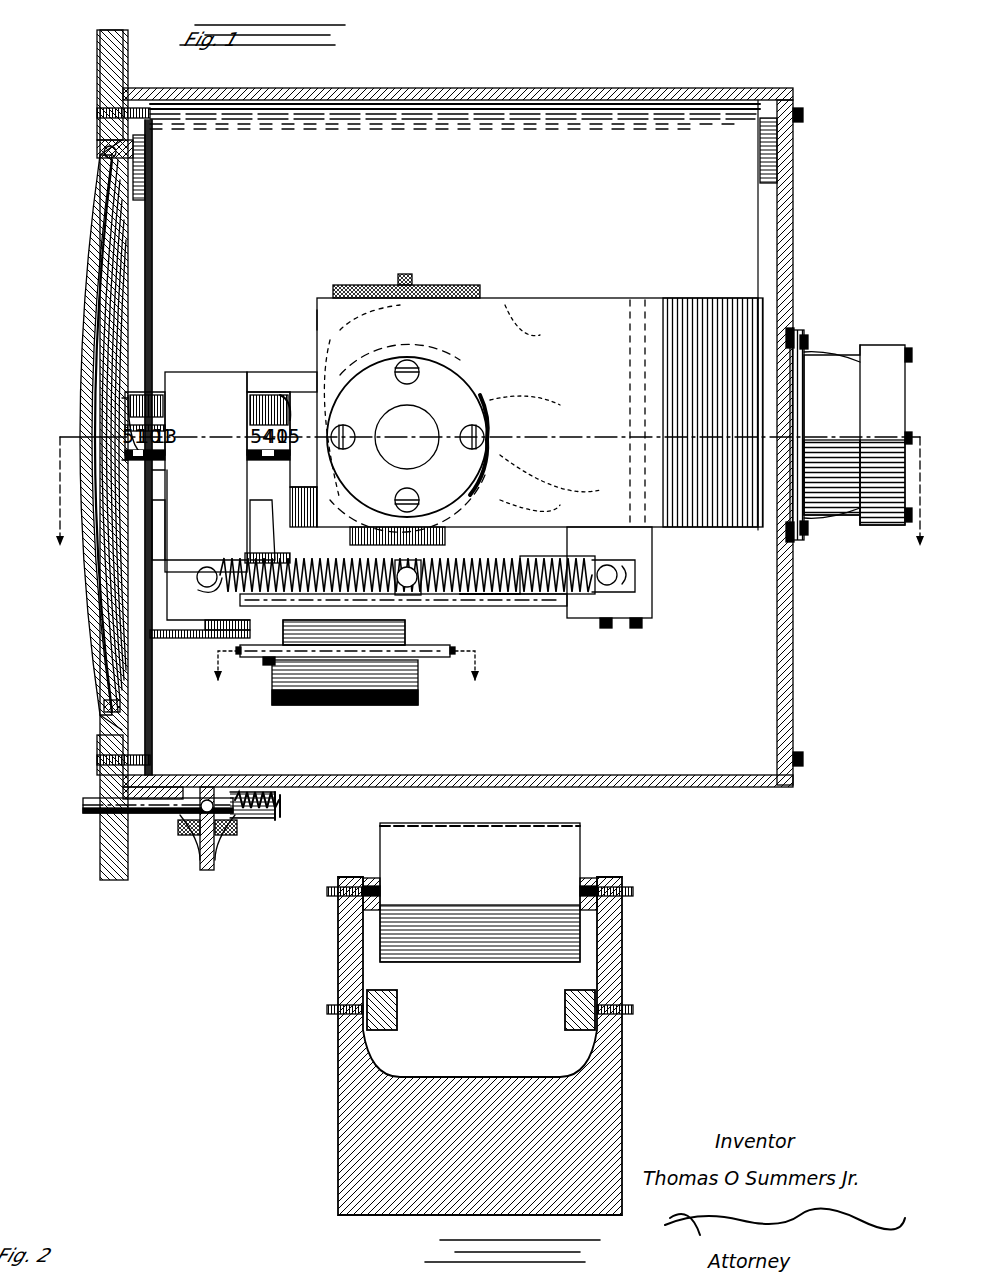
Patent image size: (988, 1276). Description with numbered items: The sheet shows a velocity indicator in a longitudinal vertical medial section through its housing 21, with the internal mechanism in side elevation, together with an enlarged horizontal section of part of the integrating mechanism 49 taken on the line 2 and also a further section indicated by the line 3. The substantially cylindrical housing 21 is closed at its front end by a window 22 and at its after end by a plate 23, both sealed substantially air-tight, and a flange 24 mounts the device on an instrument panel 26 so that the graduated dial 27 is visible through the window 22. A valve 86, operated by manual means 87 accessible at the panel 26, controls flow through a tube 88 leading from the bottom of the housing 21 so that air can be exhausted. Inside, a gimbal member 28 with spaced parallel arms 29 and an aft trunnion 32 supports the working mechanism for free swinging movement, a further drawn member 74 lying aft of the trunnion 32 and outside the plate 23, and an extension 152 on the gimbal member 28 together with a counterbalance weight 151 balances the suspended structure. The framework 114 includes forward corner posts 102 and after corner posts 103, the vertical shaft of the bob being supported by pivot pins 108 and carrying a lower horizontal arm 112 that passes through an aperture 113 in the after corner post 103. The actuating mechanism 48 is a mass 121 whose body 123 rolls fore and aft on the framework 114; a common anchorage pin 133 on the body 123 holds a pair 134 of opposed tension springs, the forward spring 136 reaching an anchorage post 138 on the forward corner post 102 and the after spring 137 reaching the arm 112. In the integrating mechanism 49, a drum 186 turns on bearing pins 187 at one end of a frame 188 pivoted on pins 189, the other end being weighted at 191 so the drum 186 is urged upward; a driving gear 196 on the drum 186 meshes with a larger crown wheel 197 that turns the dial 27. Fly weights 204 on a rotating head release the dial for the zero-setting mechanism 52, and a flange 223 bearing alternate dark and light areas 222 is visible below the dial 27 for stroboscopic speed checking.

In FIG. 1, the housing 21 is at (650, 90).
In FIG. 1, the window 22 is at (90, 252).
In FIG. 1, the plate 23 is at (785, 200).
In FIG. 1, the flange 24 is at (97, 149).
In FIG. 1, the instrument panel 26 is at (97, 72).
In FIG. 1, the graduated dial 27 is at (160, 425).
In FIG. 1, the gimbal member 28 is at (537, 377).
In FIG. 1, the arm 29 is at (518, 305).
In FIG. 1, the trunnion 32 is at (800, 330).
In FIG. 1, the zero-setting mechanism 52 is at (205, 365).
In FIG. 1, the shaft coupling 74 is at (872, 345).
In FIG. 1, the valve 86 is at (170, 822).
In FIG. 1, the manual control means 87 is at (88, 815).
In FIG. 1, the tube 88 is at (197, 862).
In FIG. 1, the forward corner post 102 is at (228, 403).
In FIG. 1, the after corner post 103 is at (648, 546).
In FIG. 1, the pivot pin 108 is at (606, 628).
In FIG. 1, the horizontal arm 112 is at (612, 582).
In FIG. 1, the aperture 113 is at (626, 576).
In FIG. 1, the framework 114 is at (298, 370).
In FIG. 1, the mass 121 is at (485, 606).
In FIG. 1, the body 123 is at (430, 600).
In FIG. 1, the common anchorage pin 133 is at (418, 562).
In FIG. 1, the pair of opposed tension springs 134 is at (238, 552).
In FIG. 1, the forward spring 136 is at (270, 562).
In FIG. 1, the after coil spring 137 is at (582, 560).
In FIG. 1, the anchorage post 138 is at (200, 588).
In FIG. 1, the counterbalance weight 151 is at (457, 285).
In FIG. 1, the extension 152 is at (318, 314).
In FIG. 1, the drum 186 is at (373, 705).
In FIG. 2, the drum 186 is at (385, 836).
In FIG. 2, the pivotal bearing pin 187 is at (342, 903).
In FIG. 2, the frame 188 is at (343, 950).
In FIG. 2, the pin 189 is at (340, 1020).
In FIG. 1, the weight 191 is at (430, 658).
In FIG. 2, the weight 191 is at (343, 1130).
In FIG. 1, the driving gear 196 is at (270, 665).
In FIG. 2, the driving gear 196 is at (373, 878).
In FIG. 1, the driven crown wheel 197 is at (277, 646).
In FIG. 1, the fly weight 204 is at (160, 517).
In FIG. 1, the alternate dark and light colored areas 222 is at (273, 480).
In FIG. 1, the flange 223 is at (268, 462).
In FIG. 1, the actuating mechanism 48 is at (480, 608).
In FIG. 1, the integrating mechanism 49 is at (246, 678).
In FIG. 1, the section line 2— 2 is at (346, 679).
In FIG. 1, the section line 3 is at (485, 506).